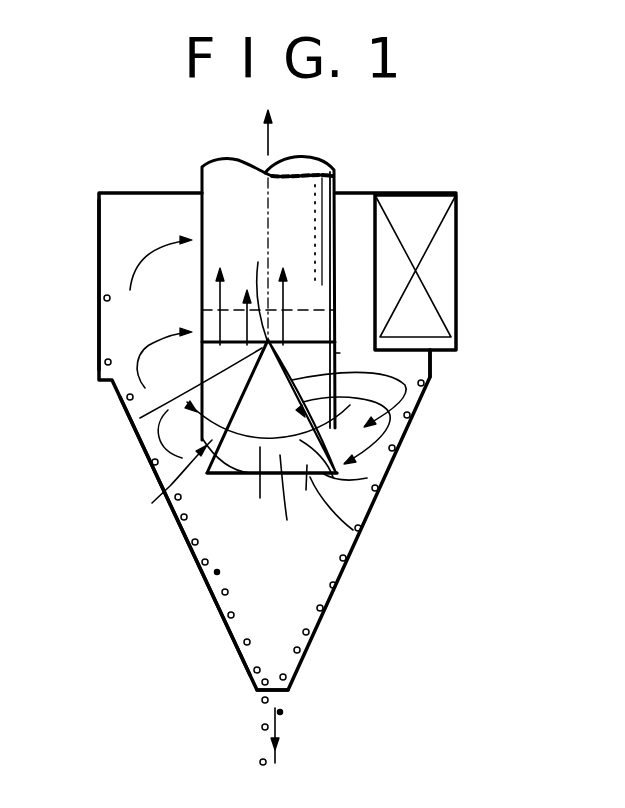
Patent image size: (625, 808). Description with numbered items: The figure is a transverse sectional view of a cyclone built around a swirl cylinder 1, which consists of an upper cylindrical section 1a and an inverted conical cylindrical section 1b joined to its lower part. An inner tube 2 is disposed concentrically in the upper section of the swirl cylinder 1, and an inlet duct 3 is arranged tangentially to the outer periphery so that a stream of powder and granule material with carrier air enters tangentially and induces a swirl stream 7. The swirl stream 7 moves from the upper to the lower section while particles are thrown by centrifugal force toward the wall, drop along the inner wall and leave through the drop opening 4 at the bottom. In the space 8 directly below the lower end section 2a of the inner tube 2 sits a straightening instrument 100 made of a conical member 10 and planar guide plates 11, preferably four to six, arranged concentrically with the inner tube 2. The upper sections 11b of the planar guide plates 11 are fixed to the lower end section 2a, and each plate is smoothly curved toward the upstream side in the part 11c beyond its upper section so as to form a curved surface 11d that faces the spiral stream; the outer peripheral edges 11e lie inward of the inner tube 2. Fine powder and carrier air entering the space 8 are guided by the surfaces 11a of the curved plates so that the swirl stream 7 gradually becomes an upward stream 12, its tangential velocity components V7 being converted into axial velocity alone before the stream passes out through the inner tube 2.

The swirl cylinder 1 is at (100, 372).
The cylindrical section 1a is at (99, 271).
The inverted conical cylindrical section 1b is at (150, 468).
The inner tube 2 is at (202, 212).
The lower end section 2a is at (335, 333).
The inlet duct 3 is at (458, 207).
The drop opening 4 is at (282, 692).
The swirl stream 7 is at (145, 250).
The space 8 is at (316, 509).
The conical member 10 is at (412, 412).
The planar guide plates 11 is at (342, 478).
The surfaces 11a is at (430, 378).
The upper sections 11b is at (251, 283).
The part 11c is at (345, 475).
The curved surface 11d is at (393, 452).
The outer peripheral edges 11e is at (158, 420).
The upward stream 12 is at (284, 298).
The straightening instrument 100 is at (152, 489).
The tangential velocity components V7 is at (153, 343).